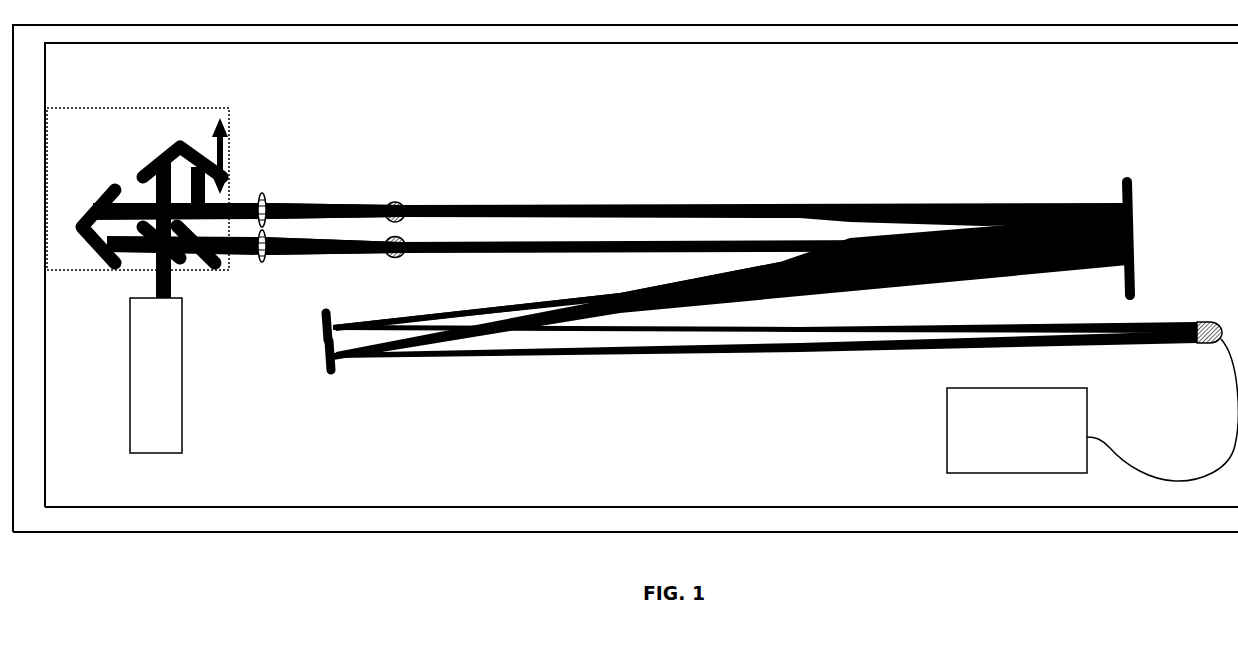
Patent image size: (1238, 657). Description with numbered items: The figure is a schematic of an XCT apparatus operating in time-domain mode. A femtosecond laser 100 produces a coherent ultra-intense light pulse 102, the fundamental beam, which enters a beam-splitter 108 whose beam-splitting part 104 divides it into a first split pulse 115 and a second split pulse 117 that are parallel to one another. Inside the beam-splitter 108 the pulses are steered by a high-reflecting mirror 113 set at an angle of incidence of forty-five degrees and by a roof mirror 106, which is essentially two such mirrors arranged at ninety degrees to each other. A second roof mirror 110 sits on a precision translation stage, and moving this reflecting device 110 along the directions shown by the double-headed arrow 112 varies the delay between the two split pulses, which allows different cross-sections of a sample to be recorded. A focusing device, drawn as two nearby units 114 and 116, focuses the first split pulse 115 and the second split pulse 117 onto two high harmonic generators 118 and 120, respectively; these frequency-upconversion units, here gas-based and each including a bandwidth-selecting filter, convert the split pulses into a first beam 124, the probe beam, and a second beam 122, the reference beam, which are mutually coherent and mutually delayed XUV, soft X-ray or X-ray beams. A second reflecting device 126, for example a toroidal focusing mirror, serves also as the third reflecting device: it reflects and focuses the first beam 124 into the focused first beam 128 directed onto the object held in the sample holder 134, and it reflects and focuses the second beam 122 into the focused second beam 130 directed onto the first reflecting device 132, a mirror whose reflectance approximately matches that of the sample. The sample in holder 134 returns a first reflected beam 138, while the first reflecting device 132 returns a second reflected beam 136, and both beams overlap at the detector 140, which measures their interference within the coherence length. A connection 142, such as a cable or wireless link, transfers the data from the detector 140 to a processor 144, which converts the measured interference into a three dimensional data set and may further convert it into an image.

The femtosecond laser 100 is at (183, 438).
The coherent ultra-intense light pulse 102 is at (172, 286).
The beam-splitting part 104 is at (146, 262).
The roof mirror 106 is at (87, 248).
The beam-splitter 108 is at (140, 101).
The roof mirror on precision translation stage 110 is at (181, 136).
The double-headed arrow 112 is at (224, 127).
The high-reflecting mirror 113 is at (222, 257).
The focusing device unit 114 is at (260, 191).
The first split pulse 115 is at (337, 198).
The focusing device unit 116 is at (265, 231).
The second split pulse 117 is at (343, 233).
The high harmonic generator 118 is at (399, 200).
The high harmonic generator 120 is at (401, 233).
The second beam 122 is at (804, 235).
The first beam 124 is at (884, 198).
The second reflecting device 126 is at (1129, 181).
The first beam after reflection 128 is at (998, 202).
The second beam after reflection 130 is at (1045, 202).
The first reflecting device 132 is at (341, 334).
The sample holder 134 is at (343, 378).
The second reflected beam 136 is at (679, 336).
The first reflected beam 138 is at (729, 350).
The detector 140 is at (1206, 340).
The connection 142 is at (1229, 446).
The processor 144 is at (946, 441).